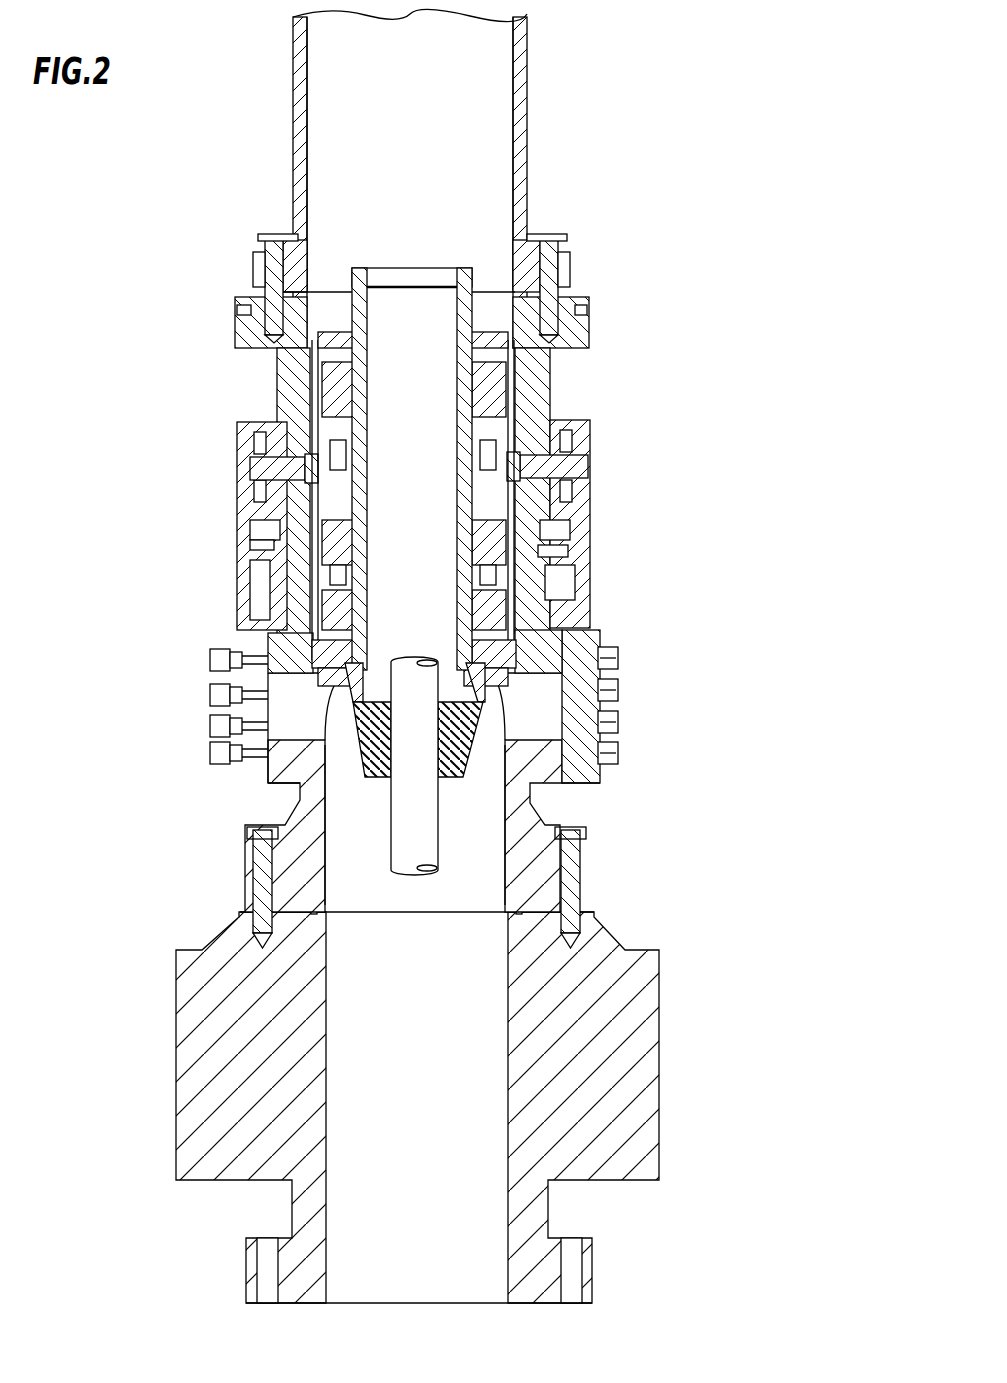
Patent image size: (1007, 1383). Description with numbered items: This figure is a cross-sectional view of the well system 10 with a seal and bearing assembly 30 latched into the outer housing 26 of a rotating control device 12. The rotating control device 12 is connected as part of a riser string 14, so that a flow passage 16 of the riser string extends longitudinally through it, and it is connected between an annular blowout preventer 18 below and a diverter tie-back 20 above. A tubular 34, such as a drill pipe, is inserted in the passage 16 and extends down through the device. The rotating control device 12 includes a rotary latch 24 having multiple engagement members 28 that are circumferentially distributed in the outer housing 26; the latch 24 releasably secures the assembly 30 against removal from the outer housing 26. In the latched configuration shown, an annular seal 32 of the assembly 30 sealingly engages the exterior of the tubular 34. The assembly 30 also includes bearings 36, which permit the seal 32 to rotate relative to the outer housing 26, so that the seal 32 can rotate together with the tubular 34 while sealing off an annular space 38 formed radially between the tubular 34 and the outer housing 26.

The well system 10 is at (468, 656).
The rotating control device 12 is at (268, 407).
The riser string 14 is at (270, 198).
The flow passage 16 is at (422, 95).
The annular blowout preventer 18 is at (662, 980).
The diverter tie-back 20 is at (530, 178).
The rotary latch 24 is at (590, 492).
The outer housing 26 is at (538, 805).
The engagement members 28 is at (240, 468).
The seal and bearing assembly 30 is at (520, 420).
The annular seal 32 is at (475, 747).
The tubular 34 is at (442, 847).
The bearings 36 is at (317, 505).
The annular space 38 is at (363, 810).